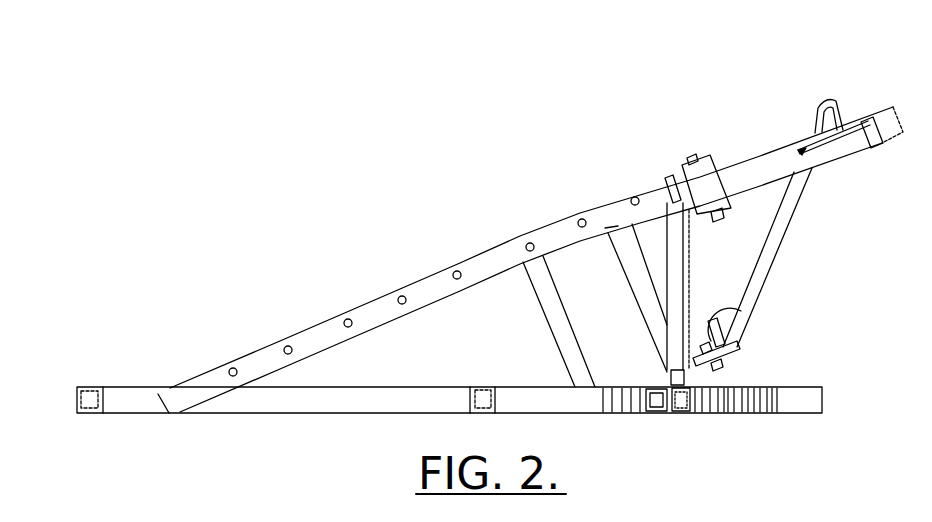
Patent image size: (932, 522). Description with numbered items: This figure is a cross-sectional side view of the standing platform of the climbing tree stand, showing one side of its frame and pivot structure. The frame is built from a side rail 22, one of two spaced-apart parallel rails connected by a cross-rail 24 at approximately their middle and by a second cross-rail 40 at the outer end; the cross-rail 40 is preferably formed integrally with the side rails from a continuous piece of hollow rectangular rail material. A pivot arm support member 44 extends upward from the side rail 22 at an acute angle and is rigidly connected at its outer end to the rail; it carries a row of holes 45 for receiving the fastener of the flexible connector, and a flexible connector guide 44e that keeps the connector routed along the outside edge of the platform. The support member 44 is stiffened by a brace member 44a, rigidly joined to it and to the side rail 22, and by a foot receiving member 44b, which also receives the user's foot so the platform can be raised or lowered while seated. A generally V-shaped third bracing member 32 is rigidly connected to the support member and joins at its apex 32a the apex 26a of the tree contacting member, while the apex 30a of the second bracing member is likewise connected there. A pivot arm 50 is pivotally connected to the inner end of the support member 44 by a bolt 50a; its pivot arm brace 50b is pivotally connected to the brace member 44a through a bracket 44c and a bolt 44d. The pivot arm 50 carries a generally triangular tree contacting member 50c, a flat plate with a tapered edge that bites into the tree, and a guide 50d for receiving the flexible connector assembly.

The side rail 22 is at (388, 405).
The cross-rail 24 is at (497, 398).
The apex of tree contacting member 26a is at (693, 398).
The apex of second bracing member 30a is at (645, 398).
The third bracing member 32 is at (698, 284).
The apex of third bracing member 32a is at (668, 378).
The second cross-rail 40 is at (82, 388).
The pivot arm support member 44 is at (410, 289).
The brace member 44a is at (620, 238).
The foot receiving member 44b is at (567, 304).
The bracket 44c is at (737, 351).
The bolt 44d is at (723, 296).
The flexible connector guide 44e is at (667, 180).
The holes 45 is at (292, 352).
The pivot arm 50 is at (761, 156).
The bolt 50a is at (692, 157).
The pivot arm brace 50b is at (780, 243).
The tree contacting member 50c is at (815, 156).
The guide 50d is at (836, 100).